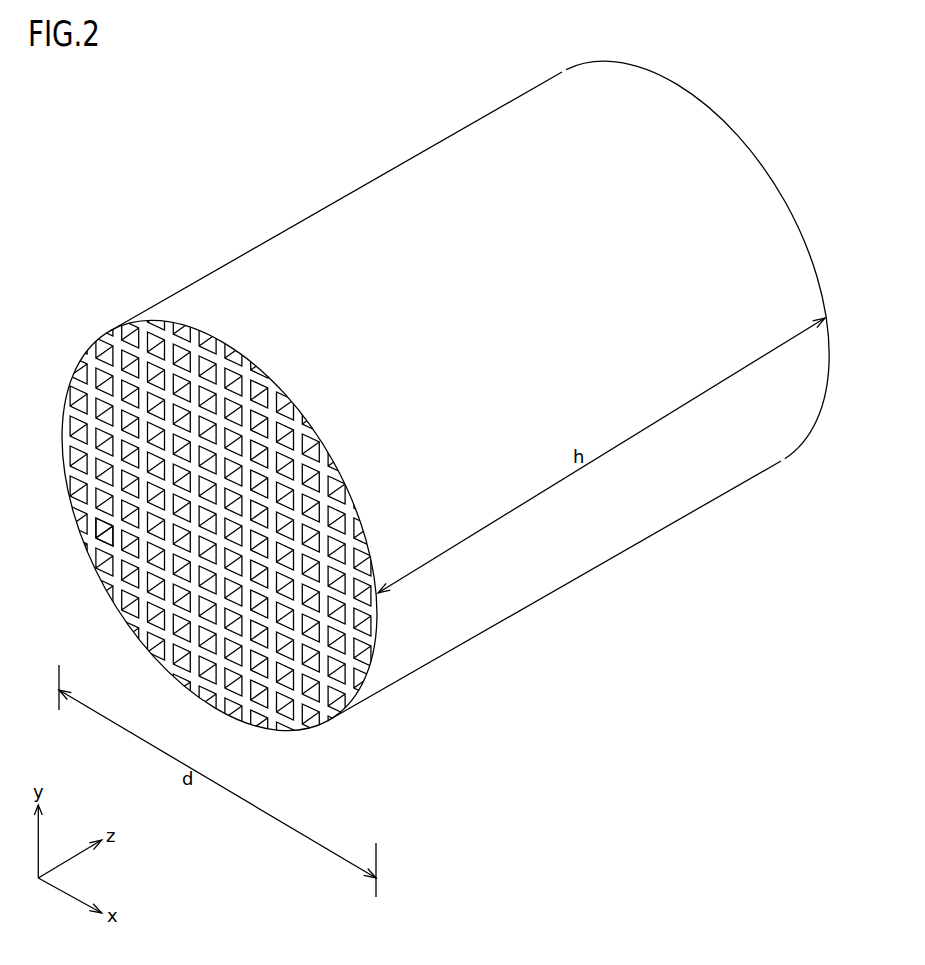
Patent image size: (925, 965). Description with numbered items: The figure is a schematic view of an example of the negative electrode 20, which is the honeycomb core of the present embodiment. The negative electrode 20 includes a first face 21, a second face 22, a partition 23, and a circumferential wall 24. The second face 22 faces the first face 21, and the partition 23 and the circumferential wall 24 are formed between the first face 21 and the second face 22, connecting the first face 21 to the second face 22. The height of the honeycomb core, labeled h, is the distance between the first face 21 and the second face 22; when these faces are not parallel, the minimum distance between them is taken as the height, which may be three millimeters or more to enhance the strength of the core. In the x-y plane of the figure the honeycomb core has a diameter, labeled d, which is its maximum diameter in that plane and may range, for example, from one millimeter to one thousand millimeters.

The negative electrode 20 is at (203, 108).
The first face 21 is at (219, 551).
The second face 22 is at (741, 141).
The partition 23 is at (106, 528).
The circumferential wall 24 is at (287, 275).